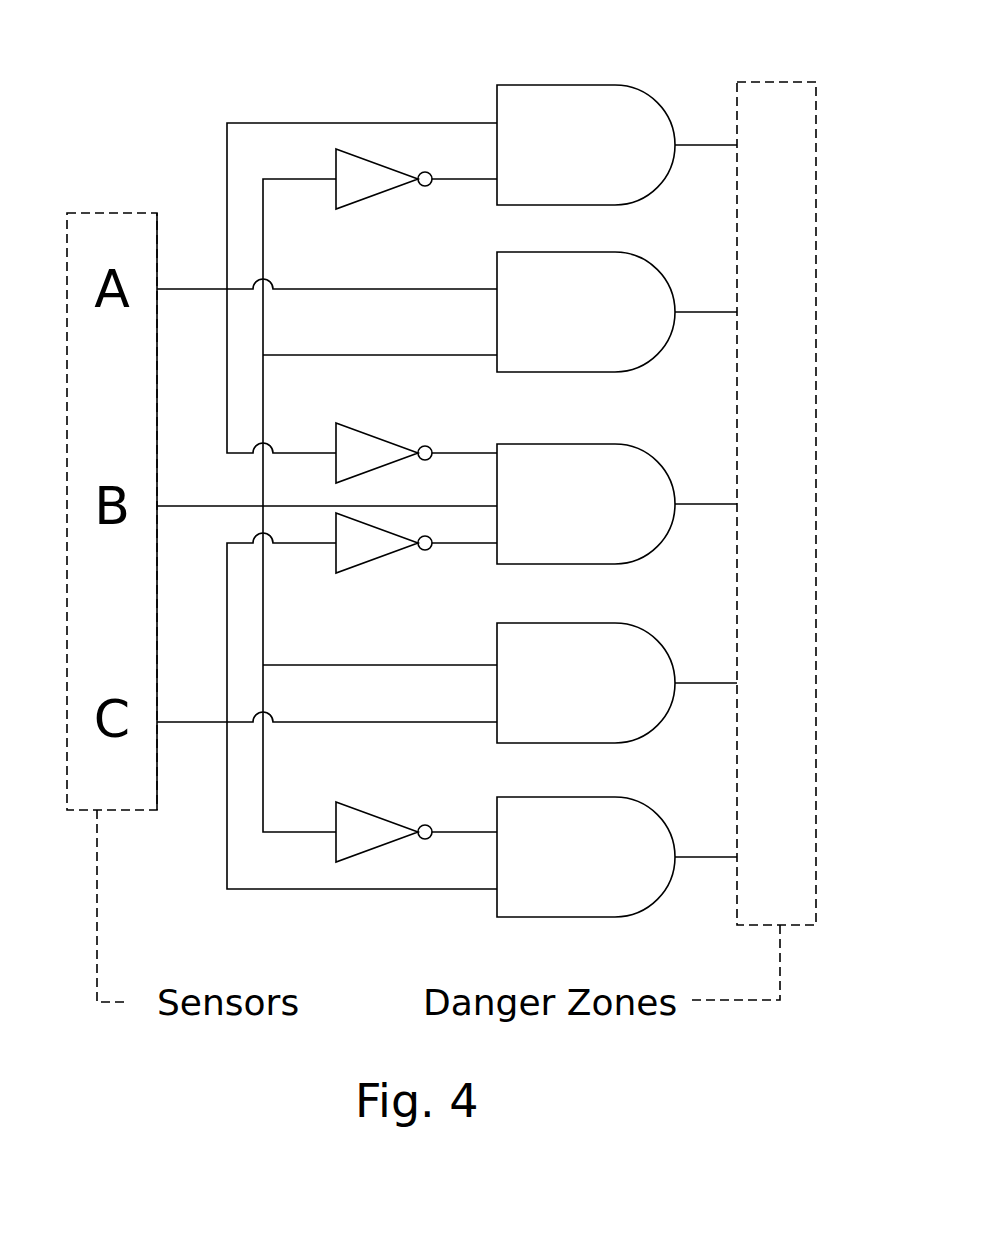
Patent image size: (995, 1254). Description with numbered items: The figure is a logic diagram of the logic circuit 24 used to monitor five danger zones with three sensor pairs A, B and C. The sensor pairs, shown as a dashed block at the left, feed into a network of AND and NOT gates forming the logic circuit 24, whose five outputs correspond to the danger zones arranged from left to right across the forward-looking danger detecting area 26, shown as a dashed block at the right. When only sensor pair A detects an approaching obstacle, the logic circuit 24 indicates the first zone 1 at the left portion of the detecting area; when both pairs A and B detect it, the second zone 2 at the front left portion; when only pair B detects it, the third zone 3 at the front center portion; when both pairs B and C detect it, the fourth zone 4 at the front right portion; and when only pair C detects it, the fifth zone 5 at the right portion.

The logic circuit 24 is at (407, 93).
The forward-looking danger detecting area 26 is at (776, 80).
The first zone 1 is at (735, 142).
The second zone 2 is at (735, 305).
The third zone 3 is at (735, 498).
The fourth zone 4 is at (735, 675).
The fifth zone 5 is at (735, 860).